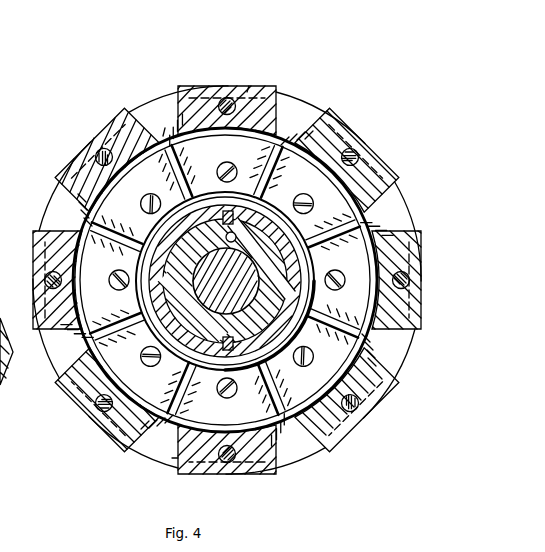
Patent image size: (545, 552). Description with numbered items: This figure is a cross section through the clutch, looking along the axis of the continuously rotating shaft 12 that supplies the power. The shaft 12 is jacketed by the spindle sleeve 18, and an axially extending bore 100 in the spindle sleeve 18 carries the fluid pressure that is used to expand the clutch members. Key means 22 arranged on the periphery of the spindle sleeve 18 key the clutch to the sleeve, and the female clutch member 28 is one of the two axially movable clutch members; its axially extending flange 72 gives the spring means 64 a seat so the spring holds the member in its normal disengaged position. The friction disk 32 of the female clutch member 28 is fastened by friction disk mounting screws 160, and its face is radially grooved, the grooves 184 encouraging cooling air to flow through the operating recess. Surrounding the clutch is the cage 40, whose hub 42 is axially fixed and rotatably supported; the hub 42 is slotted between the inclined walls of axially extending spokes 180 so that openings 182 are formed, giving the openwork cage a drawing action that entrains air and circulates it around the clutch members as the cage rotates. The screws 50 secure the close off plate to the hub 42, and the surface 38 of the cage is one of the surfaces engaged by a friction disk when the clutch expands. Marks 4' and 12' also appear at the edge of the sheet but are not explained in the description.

The shaft 12 is at (226, 281).
The spindle sleeve 18 is at (285, 280).
The key means 22 is at (223, 224).
The female clutch member 28 is at (293, 124).
The friction disk 32 is at (283, 128).
The surface 38 is at (174, 460).
The cage 40 is at (250, 85).
The hub 42 is at (165, 128).
The screw 50 is at (228, 97).
The spring means 64 is at (141, 294).
The axially extending flange 72 is at (270, 214).
The axially extending bore 100 is at (229, 243).
The friction disk mounting screw 160 is at (165, 180).
The axially extending spoke 180 is at (197, 87).
The opening 182 is at (160, 130).
The radial groove 184 is at (185, 173).
The adjacent figure part 4' is at (7, 291).
The adjacent figure shaft 12' is at (10, 340).